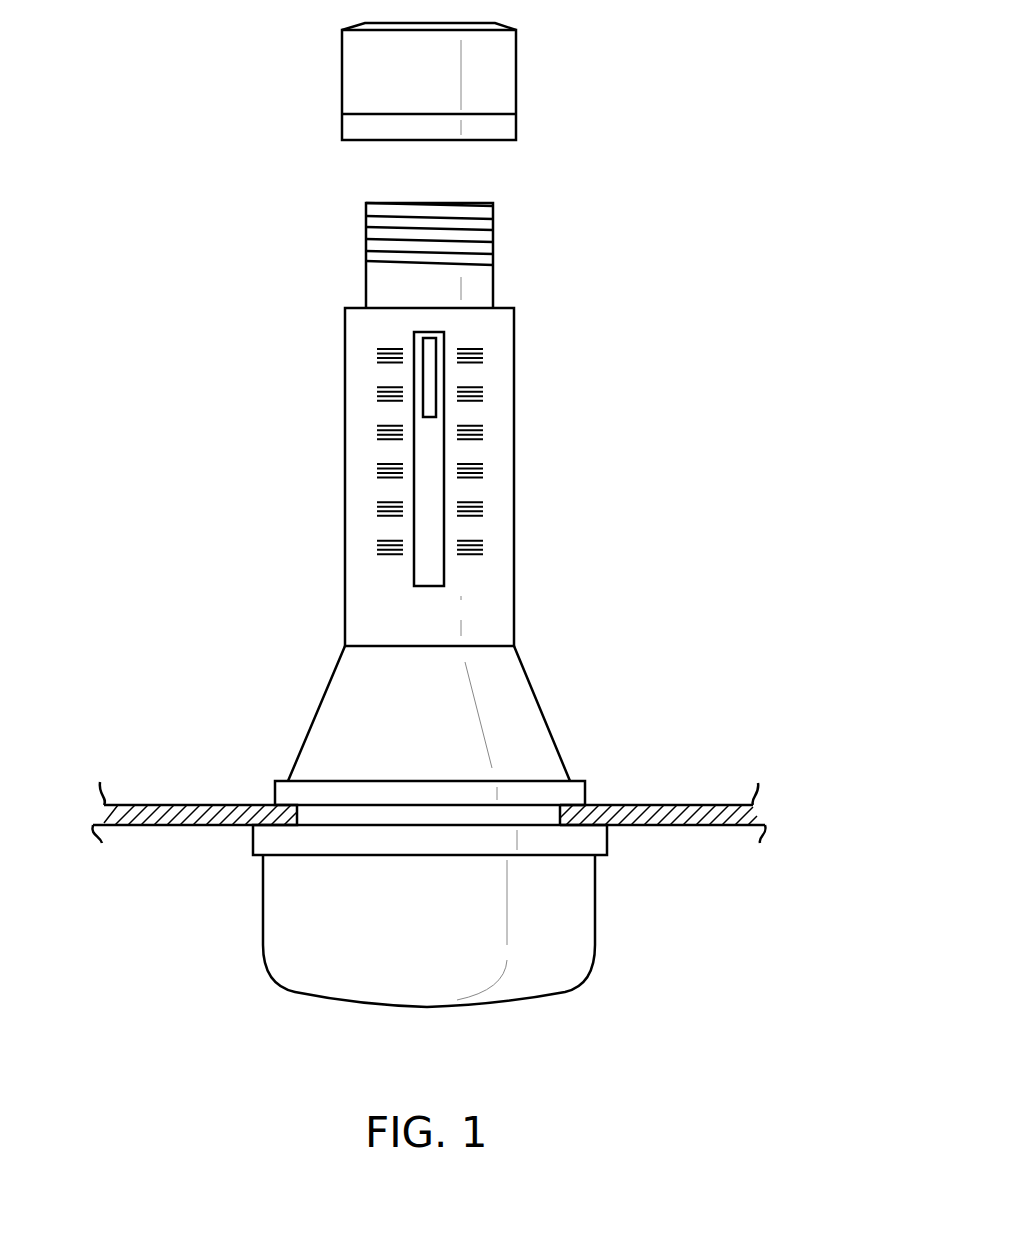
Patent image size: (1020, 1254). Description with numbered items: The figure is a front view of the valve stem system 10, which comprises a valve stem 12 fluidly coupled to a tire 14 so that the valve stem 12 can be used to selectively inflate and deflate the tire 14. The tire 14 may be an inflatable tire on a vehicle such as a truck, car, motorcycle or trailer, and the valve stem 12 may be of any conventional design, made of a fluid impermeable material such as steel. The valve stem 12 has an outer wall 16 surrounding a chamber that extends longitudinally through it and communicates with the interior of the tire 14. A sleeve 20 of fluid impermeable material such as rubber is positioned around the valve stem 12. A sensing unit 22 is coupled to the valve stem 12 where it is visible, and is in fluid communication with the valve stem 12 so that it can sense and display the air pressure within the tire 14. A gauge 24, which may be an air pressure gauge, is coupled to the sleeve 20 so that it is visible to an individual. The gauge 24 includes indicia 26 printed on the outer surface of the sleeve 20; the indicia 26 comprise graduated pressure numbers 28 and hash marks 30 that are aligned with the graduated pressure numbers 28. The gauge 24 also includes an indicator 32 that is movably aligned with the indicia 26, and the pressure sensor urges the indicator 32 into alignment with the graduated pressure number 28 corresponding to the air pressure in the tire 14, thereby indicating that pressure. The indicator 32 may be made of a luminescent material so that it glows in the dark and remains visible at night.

The valve stem system 10 is at (723, 136).
The valve stem 12 is at (522, 493).
The tire 14 is at (180, 804).
The outer wall 16 is at (492, 277).
The sleeve 20 is at (352, 308).
The sensing unit 22 is at (350, 508).
The gauge 24 is at (416, 550).
The indicia 26 is at (497, 332).
The graduated pressure numbers 28 is at (487, 452).
The hash marks 30 is at (375, 397).
The indicator 32 is at (428, 337).